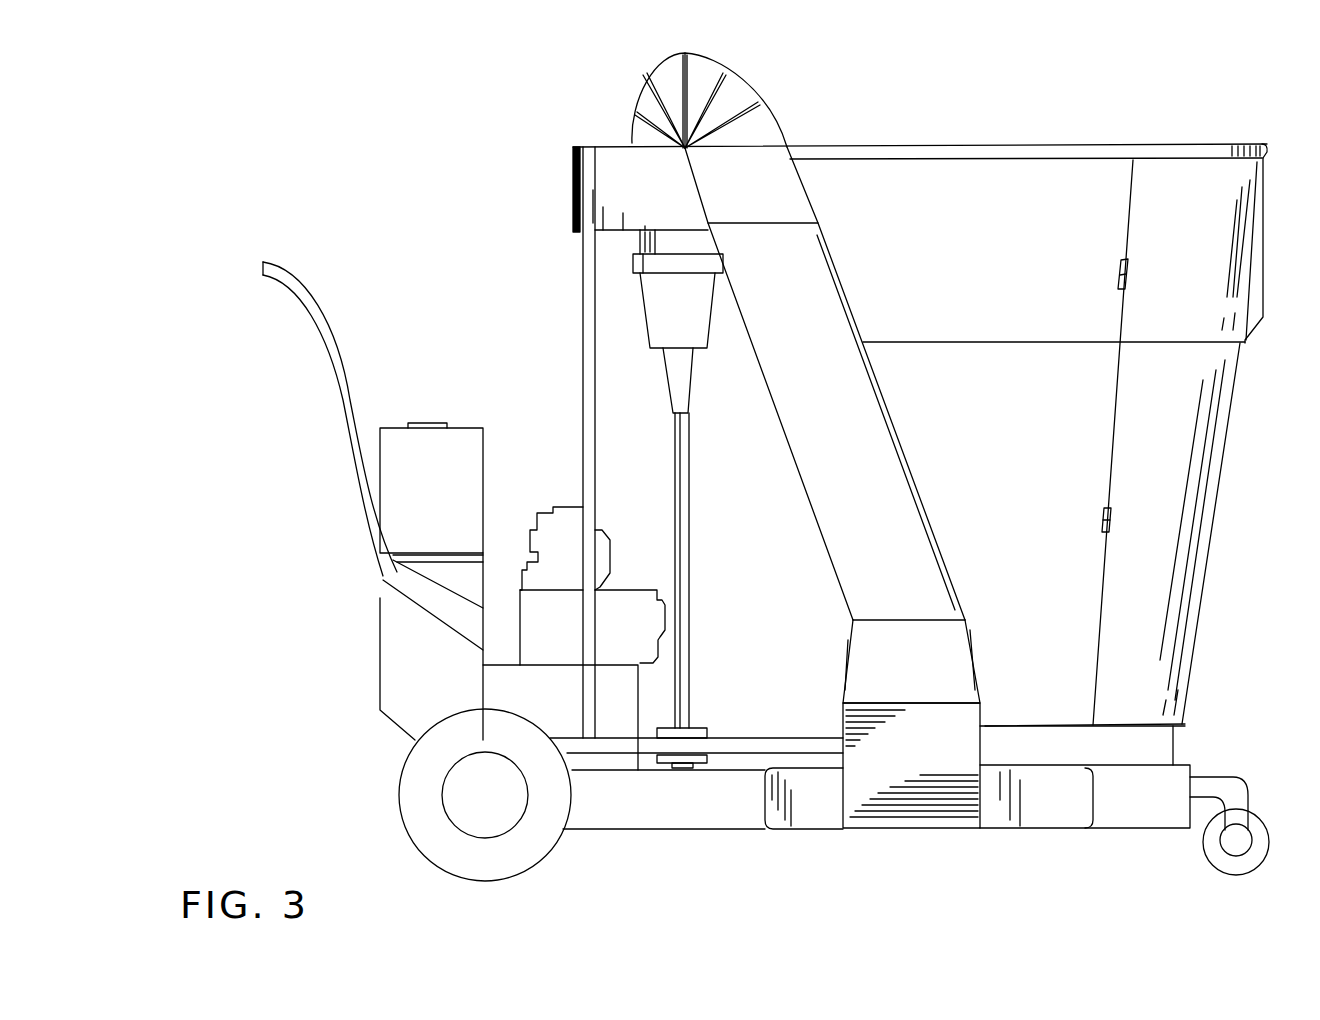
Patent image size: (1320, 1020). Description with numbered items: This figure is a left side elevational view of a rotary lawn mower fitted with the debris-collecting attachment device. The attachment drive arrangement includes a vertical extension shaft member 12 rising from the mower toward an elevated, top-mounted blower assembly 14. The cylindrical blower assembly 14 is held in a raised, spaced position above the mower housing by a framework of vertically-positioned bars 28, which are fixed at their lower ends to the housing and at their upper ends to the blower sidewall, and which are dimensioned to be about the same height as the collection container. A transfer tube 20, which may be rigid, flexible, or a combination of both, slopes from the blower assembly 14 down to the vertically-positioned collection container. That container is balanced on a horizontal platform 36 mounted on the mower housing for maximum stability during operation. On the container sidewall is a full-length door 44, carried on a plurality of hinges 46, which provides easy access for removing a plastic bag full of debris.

The vertical extension shaft member 12 is at (690, 498).
The blower assembly 14 is at (623, 200).
The transfer tube 20 is at (882, 462).
The vertically-positioned bars 28 is at (582, 316).
The horizontal platform 36 is at (1163, 745).
The full-length door 44 is at (1075, 462).
The hinges 46 is at (1121, 272).